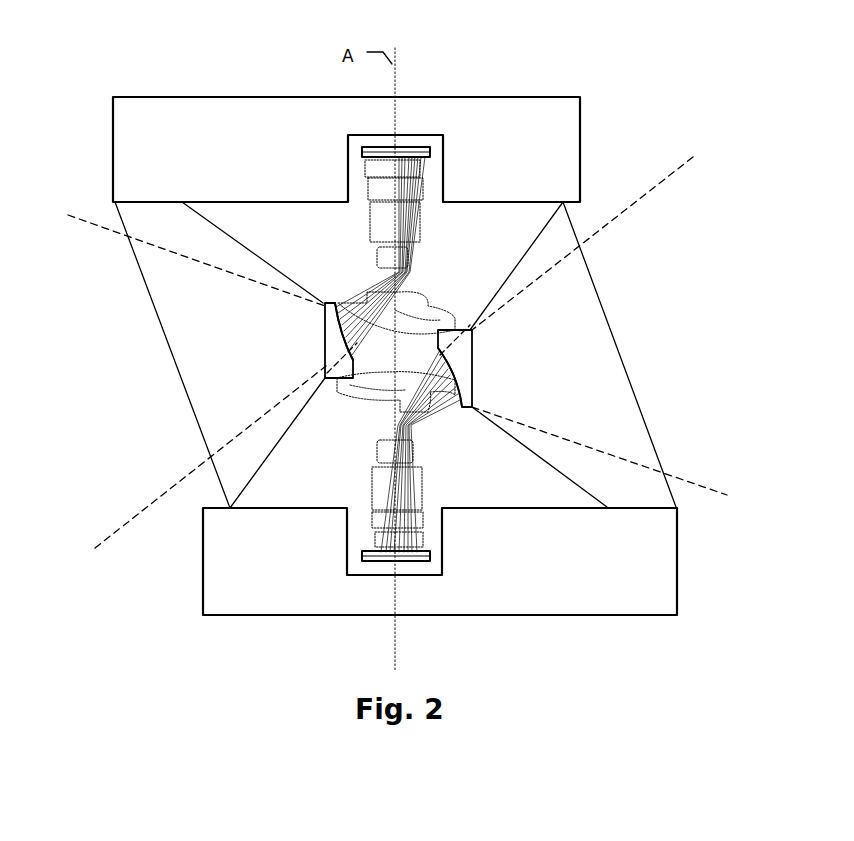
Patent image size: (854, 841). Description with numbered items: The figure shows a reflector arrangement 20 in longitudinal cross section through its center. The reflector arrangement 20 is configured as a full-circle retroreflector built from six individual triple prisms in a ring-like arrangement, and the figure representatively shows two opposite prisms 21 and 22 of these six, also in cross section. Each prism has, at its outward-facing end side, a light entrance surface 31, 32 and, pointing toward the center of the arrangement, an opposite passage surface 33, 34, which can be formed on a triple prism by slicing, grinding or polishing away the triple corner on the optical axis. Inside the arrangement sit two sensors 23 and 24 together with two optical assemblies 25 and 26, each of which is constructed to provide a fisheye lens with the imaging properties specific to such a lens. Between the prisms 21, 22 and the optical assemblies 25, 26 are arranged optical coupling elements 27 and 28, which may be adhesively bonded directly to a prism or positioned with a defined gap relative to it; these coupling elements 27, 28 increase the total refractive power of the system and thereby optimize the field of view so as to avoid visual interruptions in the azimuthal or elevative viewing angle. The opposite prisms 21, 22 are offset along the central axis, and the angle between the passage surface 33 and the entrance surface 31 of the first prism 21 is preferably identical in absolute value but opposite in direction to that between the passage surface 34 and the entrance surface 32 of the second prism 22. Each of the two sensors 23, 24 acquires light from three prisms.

The reflector arrangement 20 is at (610, 53).
The first prism 21 is at (178, 310).
The second prism 22 is at (585, 307).
The first sensor 23 is at (405, 155).
The second sensor 24 is at (408, 558).
The first optical assembly 25 is at (458, 240).
The second optical assembly 26 is at (337, 468).
The first optical coupling element 27 is at (308, 341).
The second optical coupling element 28 is at (494, 366).
The light entrance surface of the first prism 31 is at (176, 368).
The light entrance surface of the second prism 32 is at (630, 375).
The passage surface of the first prism 33 is at (323, 327).
The passage surface of the second prism 34 is at (472, 347).